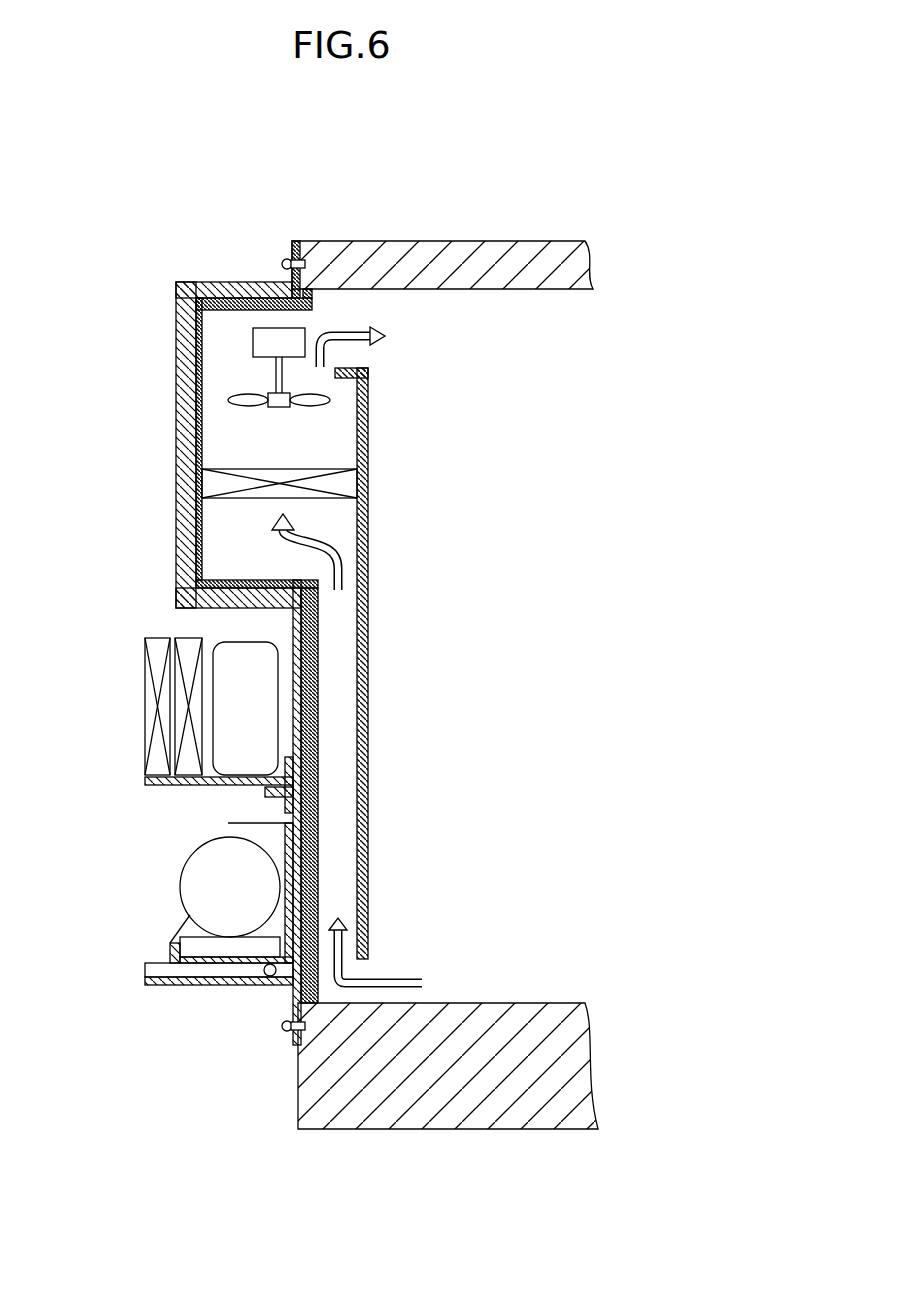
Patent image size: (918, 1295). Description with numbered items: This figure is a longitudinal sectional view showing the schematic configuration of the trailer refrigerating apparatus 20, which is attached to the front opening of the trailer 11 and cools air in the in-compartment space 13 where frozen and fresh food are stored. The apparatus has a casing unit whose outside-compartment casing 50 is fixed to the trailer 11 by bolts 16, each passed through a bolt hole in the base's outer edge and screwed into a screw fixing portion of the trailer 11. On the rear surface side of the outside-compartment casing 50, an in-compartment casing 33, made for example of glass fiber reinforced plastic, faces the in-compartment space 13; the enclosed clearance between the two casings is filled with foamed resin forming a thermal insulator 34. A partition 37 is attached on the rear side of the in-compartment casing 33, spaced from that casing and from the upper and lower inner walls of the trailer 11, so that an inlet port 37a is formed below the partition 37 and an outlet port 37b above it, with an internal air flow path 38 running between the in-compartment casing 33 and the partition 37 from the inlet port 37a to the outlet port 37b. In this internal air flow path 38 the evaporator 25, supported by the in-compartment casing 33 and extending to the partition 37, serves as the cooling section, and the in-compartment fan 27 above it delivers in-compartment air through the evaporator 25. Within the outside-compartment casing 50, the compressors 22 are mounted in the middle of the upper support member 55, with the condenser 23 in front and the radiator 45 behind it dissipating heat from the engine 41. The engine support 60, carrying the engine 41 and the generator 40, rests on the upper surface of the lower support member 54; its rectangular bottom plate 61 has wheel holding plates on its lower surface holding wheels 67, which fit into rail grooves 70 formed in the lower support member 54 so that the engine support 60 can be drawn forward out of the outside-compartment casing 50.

The trailer 11 is at (425, 242).
The in-compartment space 13 is at (498, 700).
The bolt 16 is at (280, 262).
The trailer refrigerating apparatus 20 is at (205, 584).
The compressor 22 is at (243, 725).
The condenser 23 is at (155, 652).
The evaporator 25 is at (303, 473).
The in-compartment fan 27 is at (267, 350).
The in-compartment casing 33 is at (248, 578).
The thermal insulator 34 is at (187, 355).
The partition 37 is at (360, 602).
The inlet port 37a is at (360, 970).
The outlet port 37b is at (327, 373).
The internal air flow path 38 is at (330, 543).
The generator 40 is at (196, 879).
The engine 41 is at (198, 863).
The radiator 45 is at (187, 643).
The outside-compartment casing 50 is at (176, 530).
The lower support member 54 is at (172, 983).
The upper support member 55 is at (158, 782).
The engine support 60 is at (180, 920).
The bottom plate 61 is at (273, 793).
The wheel 67 is at (270, 977).
The rail groove 70 is at (142, 963).